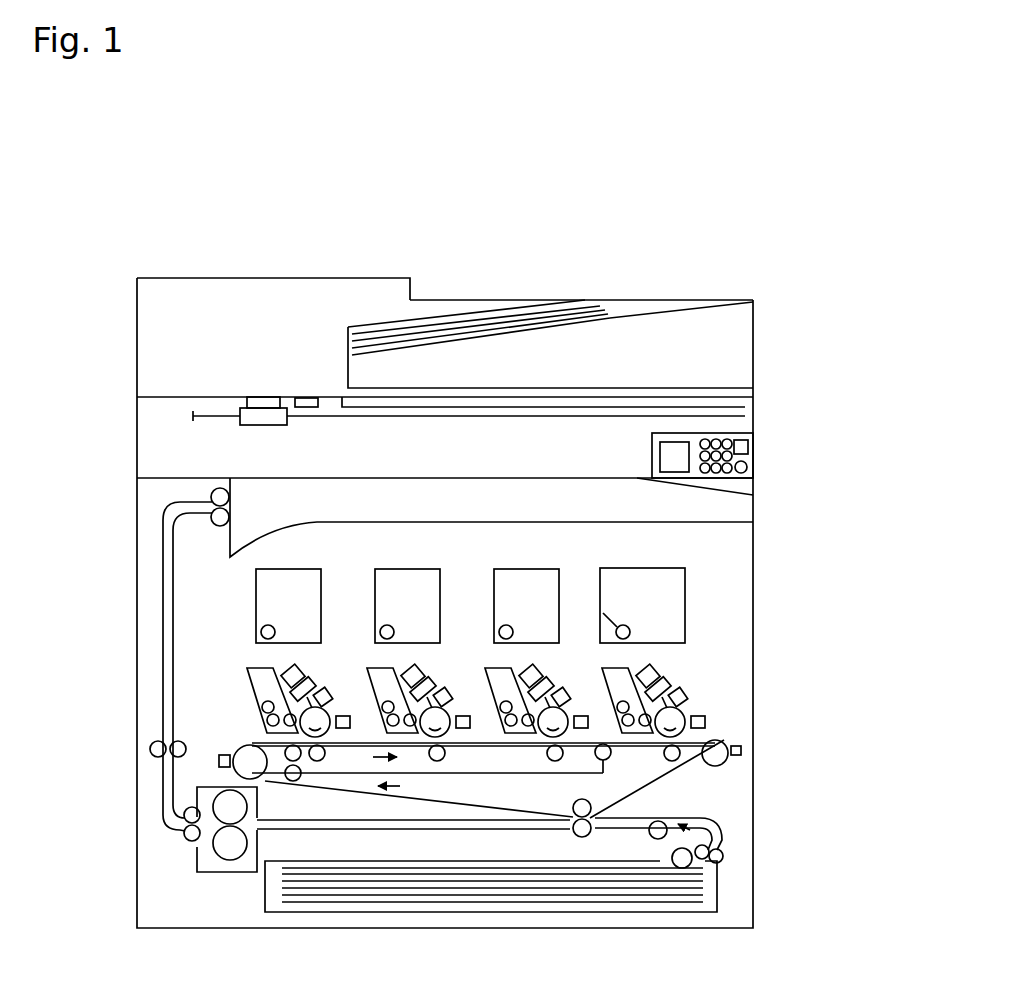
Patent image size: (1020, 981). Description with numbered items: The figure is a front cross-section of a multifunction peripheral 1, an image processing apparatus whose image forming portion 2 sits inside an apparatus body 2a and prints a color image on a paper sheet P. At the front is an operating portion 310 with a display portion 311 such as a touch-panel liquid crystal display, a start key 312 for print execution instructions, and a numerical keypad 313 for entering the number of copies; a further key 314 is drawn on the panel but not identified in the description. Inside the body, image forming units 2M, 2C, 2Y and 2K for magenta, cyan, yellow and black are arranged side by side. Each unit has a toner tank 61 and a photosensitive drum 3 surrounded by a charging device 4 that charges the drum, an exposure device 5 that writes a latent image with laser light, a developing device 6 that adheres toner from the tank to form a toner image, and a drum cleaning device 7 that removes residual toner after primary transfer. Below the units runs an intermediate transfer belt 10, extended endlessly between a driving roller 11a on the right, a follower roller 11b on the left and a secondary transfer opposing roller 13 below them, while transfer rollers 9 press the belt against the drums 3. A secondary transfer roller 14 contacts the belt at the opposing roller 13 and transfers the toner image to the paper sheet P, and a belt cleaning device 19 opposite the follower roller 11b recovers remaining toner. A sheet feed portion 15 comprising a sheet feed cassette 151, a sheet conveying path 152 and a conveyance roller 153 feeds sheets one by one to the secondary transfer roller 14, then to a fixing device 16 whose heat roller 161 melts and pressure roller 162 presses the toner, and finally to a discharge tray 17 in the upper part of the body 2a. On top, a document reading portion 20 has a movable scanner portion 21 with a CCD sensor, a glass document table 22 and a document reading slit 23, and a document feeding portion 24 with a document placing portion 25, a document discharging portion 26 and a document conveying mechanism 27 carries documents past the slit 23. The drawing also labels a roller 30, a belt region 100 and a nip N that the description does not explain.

The multifunction peripheral 1 is at (770, 517).
The image forming portion 2 is at (727, 612).
The apparatus body 2a is at (758, 567).
The image forming unit 2M is at (292, 568).
The image forming unit 2C is at (411, 568).
The image forming unit 2Y is at (530, 568).
The image forming unit 2K is at (652, 567).
The photosensitive drum 3 is at (327, 738).
The charging device 4 is at (327, 688).
The exposure device 5 is at (301, 668).
The developing device 6 is at (253, 667).
The drum cleaning device 7 is at (345, 712).
The transfer roller 9 is at (326, 760).
The intermediate transfer belt 10 is at (697, 782).
The driving roller 11a is at (727, 742).
The follower roller 11b is at (263, 779).
The secondary transfer opposing roller 13 is at (591, 805).
The secondary transfer roller 14 is at (572, 834).
The sheet feed portion 15 is at (728, 897).
The fixing device 16 is at (243, 872).
The discharge tray 17 is at (340, 522).
The belt cleaning device 19 is at (226, 754).
The document reading portion 20 is at (183, 445).
The scanner portion 21 is at (262, 426).
The document table 22 is at (742, 405).
The document reading slit 23 is at (263, 398).
The document feeding portion 24 is at (487, 300).
The document placing portion 25 is at (627, 308).
The document discharging portion 26 is at (660, 388).
The document conveying mechanism 27 is at (247, 338).
The tension roller 30 is at (612, 752).
The toner tank 61 is at (322, 585).
The intermediate transfer belt 100 is at (490, 774).
The sheet feed cassette 151 is at (647, 912).
The sheet conveying path 152 is at (175, 616).
The conveyance roller 153 is at (150, 749).
The heat roller 161 is at (205, 767).
The pressure roller 162 is at (216, 870).
The operating portion 310 is at (728, 430).
The display portion 311 is at (670, 455).
The start key 312 is at (748, 467).
The numerical keypad 313 is at (722, 481).
The key 314 is at (748, 446).
The secondary transfer nip N is at (710, 818).
The paper sheet P is at (510, 840).